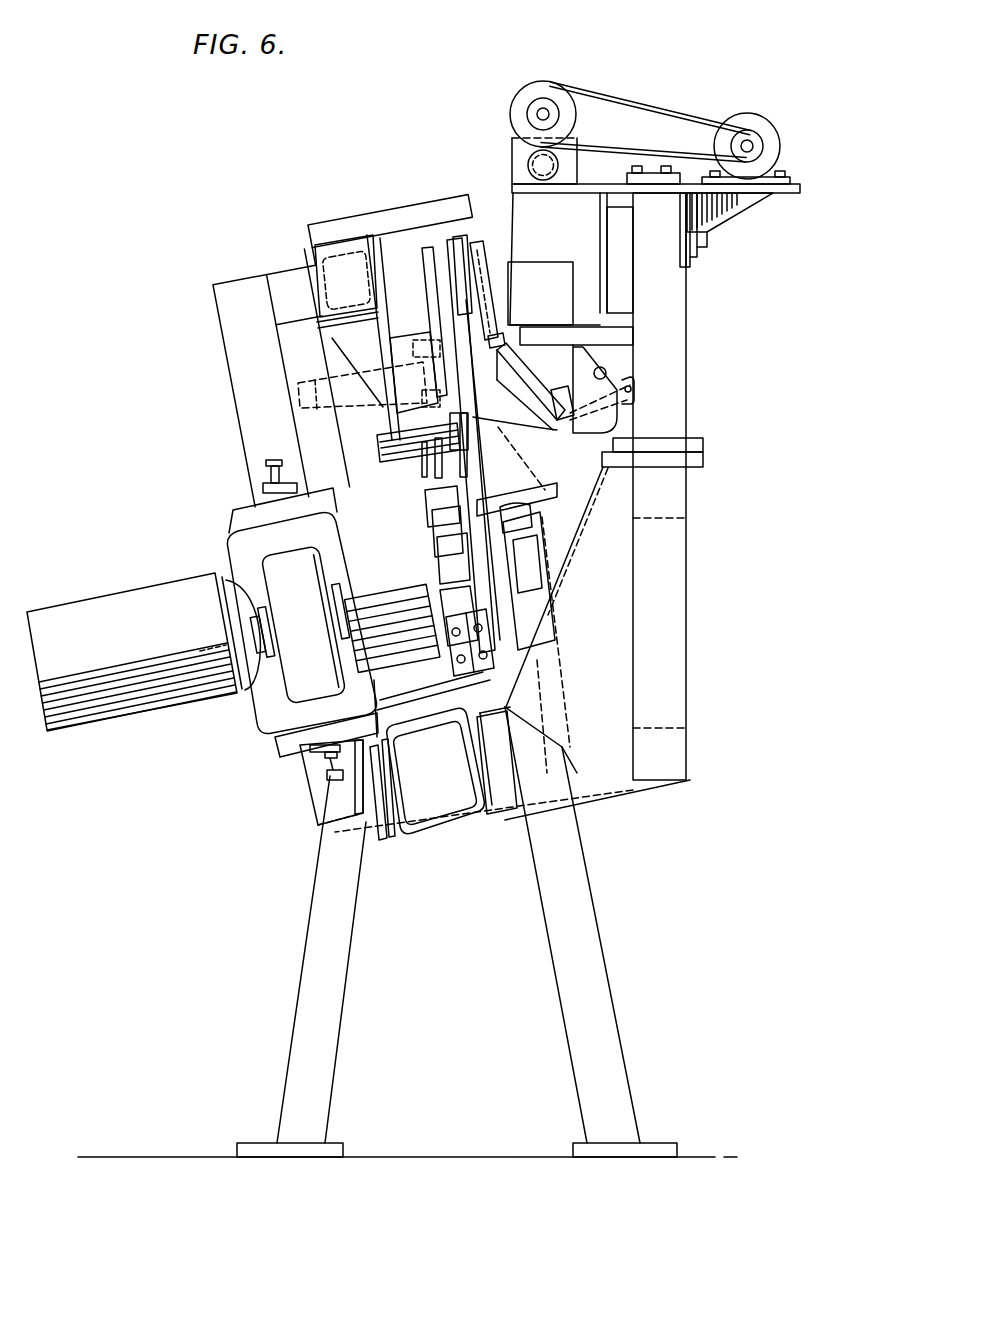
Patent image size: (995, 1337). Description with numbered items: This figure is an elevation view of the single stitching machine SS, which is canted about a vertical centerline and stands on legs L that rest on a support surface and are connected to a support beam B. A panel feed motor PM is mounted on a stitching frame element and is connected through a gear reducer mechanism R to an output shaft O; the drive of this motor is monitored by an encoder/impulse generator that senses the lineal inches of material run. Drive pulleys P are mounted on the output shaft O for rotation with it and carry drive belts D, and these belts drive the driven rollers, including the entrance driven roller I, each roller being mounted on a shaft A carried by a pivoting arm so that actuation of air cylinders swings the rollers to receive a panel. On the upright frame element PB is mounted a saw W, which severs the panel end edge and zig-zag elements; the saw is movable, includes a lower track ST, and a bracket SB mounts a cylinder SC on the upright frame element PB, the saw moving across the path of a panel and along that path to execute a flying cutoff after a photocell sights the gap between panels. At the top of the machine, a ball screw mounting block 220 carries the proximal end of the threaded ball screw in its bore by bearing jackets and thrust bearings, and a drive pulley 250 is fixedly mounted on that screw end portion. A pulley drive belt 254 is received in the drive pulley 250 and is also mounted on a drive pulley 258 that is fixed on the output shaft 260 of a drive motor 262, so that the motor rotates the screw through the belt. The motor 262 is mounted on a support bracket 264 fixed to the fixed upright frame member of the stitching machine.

The drive pulley 250 is at (518, 110).
The pulley drive belt 254 is at (604, 92).
The drive motor 262 is at (735, 104).
The drive pulley 258 is at (749, 142).
The output shaft 260 is at (756, 141).
The ball screw mounting block 220 is at (518, 163).
The support bracket 264 is at (735, 202).
The single stitching machine SS is at (146, 285).
The saw W is at (498, 383).
The bracket SB is at (626, 382).
The upright frame element PB is at (667, 398).
The shaft A is at (460, 434).
The entrance driven roller I is at (473, 410).
The cylinder SC is at (554, 636).
The lower track ST is at (531, 486).
The drive belts D is at (362, 500).
The output shaft O is at (350, 603).
The drive pulleys P is at (403, 630).
The gear reducer mechanism R is at (300, 690).
The panel feed motor PM is at (148, 690).
The support beam B is at (447, 823).
The legs L is at (335, 1012).